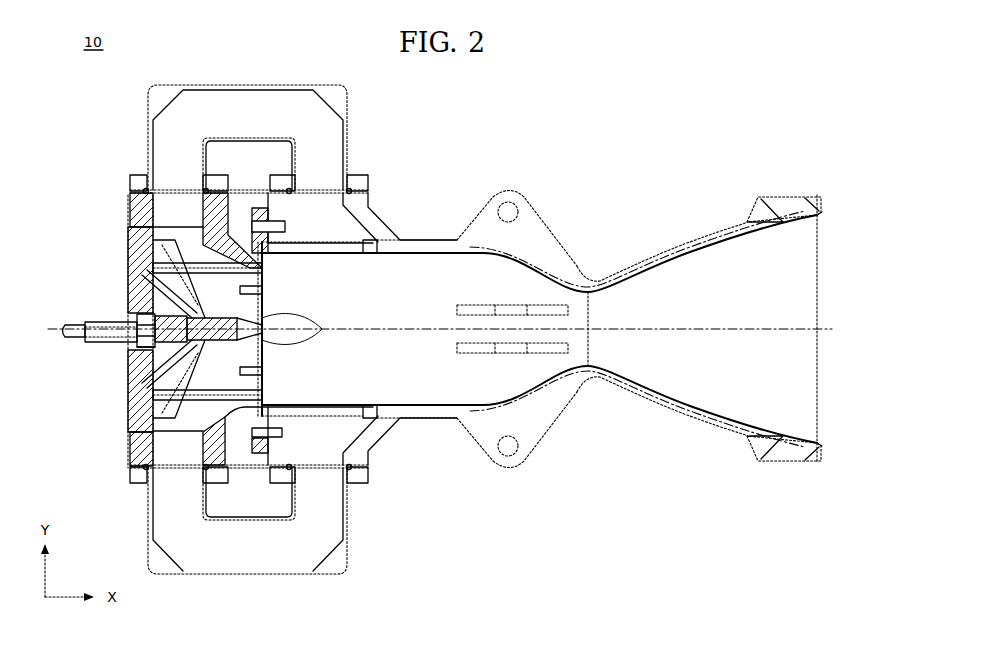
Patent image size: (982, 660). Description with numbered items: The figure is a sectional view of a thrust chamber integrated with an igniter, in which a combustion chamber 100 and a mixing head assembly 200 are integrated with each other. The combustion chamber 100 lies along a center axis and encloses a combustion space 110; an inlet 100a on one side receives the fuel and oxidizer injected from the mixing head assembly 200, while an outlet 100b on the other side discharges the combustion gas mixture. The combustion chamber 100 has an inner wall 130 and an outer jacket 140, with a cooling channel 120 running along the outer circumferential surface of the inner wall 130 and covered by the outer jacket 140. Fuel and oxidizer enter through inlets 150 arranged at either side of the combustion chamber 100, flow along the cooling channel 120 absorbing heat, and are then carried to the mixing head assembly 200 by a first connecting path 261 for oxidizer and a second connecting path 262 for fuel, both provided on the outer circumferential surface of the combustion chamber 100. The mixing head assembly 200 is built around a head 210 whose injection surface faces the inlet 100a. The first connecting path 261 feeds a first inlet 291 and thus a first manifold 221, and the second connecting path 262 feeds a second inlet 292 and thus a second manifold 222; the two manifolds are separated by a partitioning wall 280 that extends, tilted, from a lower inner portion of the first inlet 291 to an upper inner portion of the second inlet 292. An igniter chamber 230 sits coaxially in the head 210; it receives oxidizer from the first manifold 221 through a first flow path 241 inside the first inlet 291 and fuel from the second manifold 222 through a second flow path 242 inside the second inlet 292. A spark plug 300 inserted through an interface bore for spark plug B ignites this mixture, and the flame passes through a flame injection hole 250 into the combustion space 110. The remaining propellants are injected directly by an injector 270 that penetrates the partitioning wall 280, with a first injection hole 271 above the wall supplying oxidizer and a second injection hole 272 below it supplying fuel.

The combustion chamber 100 is at (842, 190).
The inlet 100a is at (268, 376).
The outlet 100b is at (820, 405).
The combustion space 110 is at (425, 283).
The cooling channel 120 is at (637, 265).
The inner wall 130 is at (768, 228).
The outer jacket 140 is at (668, 237).
The inlets 150 is at (786, 195).
The mixing head assembly 200 is at (98, 132).
The head 210 is at (126, 252).
The first manifold 221 is at (178, 290).
The second manifold 222 is at (128, 378).
The igniter chamber 230 is at (148, 312).
The first flow path 241 is at (128, 240).
The second flow path 242 is at (128, 400).
The flame injection hole 250 is at (264, 327).
The first connecting path 261 is at (250, 85).
The second connecting path 262 is at (256, 578).
The injector 270 is at (172, 256).
The first injection hole 271 is at (126, 226).
The second injection hole 272 is at (192, 218).
The partitioning wall 280 is at (205, 258).
The first inlet 291 is at (232, 205).
The second inlet 292 is at (232, 458).
The spark plug 300 is at (90, 320).
The interface bore for spark plug B is at (140, 340).